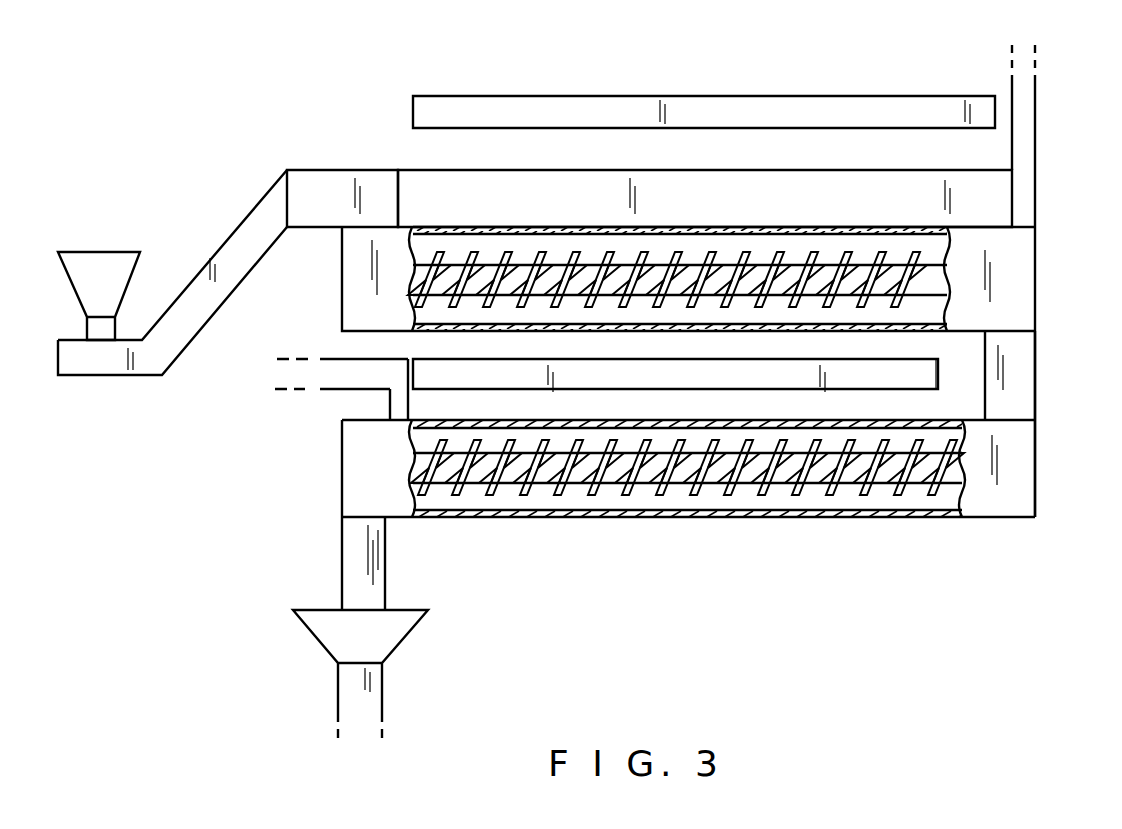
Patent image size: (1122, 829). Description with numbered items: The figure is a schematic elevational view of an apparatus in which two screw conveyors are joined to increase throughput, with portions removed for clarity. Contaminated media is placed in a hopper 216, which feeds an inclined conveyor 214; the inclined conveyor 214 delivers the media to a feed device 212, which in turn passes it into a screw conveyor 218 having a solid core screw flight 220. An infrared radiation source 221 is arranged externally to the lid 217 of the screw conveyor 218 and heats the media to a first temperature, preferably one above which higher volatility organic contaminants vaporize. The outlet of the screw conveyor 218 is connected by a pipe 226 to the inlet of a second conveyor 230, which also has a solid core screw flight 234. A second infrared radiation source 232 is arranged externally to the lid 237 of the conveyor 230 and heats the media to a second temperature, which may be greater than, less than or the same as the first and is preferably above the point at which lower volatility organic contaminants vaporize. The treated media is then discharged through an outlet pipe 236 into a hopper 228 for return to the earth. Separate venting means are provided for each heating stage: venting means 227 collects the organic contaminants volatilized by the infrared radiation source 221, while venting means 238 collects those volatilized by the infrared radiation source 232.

The feed device 212 is at (322, 188).
The inclined conveyor 214 is at (222, 270).
The hopper 216 is at (103, 272).
The lid 217 is at (413, 188).
The screw conveyor 218 is at (360, 275).
The solid core screw flight 220 is at (718, 272).
The infrared radiation source 221 is at (512, 110).
The pipe 226 is at (1013, 390).
The venting means 227 is at (1022, 93).
The hopper 228 is at (340, 633).
The conveyor 230 is at (1012, 488).
The infrared radiation source 232 is at (438, 368).
The solid core screw flight 234 is at (713, 477).
The outlet pipe 236 is at (358, 563).
The lid 237 is at (860, 412).
The venting means 238 is at (343, 373).